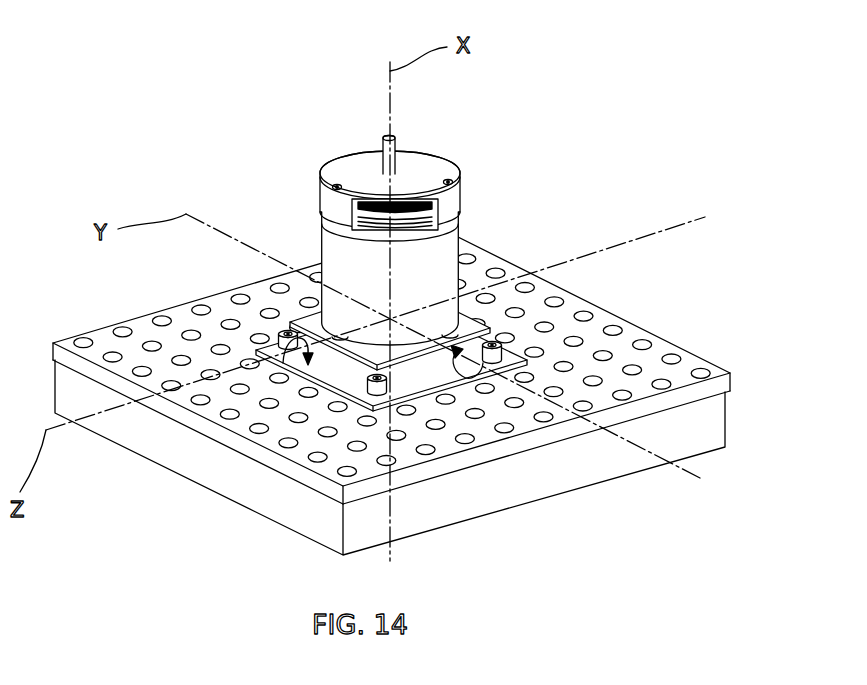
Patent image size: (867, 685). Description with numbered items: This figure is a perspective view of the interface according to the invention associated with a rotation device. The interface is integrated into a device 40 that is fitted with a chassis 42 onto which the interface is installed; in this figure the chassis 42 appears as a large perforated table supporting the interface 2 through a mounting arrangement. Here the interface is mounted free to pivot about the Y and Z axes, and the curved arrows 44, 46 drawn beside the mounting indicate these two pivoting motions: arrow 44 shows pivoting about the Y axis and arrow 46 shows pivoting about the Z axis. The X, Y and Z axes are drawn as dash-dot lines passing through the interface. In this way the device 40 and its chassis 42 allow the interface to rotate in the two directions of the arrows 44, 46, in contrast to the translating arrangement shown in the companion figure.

The device under test 2 is at (395, 160).
The device 40 is at (411, 332).
The chassis 42 is at (665, 338).
The arrow 44 is at (470, 380).
The arrow 46 is at (283, 363).